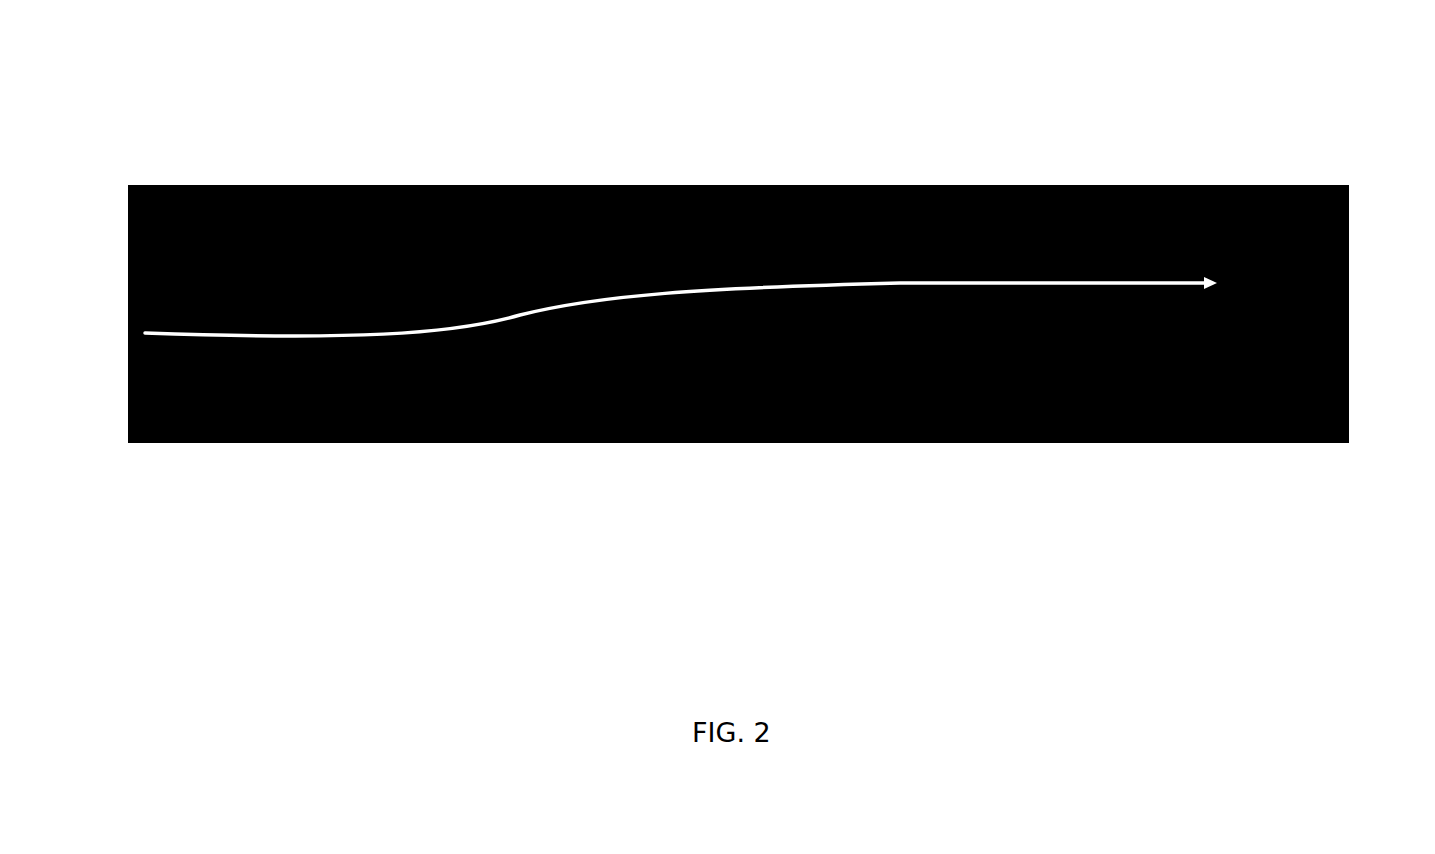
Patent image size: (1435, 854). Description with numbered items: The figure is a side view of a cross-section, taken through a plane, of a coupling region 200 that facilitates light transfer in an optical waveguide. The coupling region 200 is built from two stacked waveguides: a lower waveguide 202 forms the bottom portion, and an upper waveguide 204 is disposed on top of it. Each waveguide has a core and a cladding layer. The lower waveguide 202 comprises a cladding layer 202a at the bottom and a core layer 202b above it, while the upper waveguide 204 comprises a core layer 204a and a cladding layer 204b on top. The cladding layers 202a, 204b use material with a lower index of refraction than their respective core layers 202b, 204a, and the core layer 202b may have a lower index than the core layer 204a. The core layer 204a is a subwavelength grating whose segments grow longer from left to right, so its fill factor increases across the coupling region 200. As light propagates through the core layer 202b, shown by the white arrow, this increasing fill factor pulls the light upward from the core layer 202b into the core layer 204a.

The coupling region 200 is at (741, 248).
The lower waveguide 202 is at (741, 370).
The cladding layer 202a is at (1348, 402).
The core layer 202b is at (1348, 338).
The upper waveguide 204 is at (741, 249).
The core layer 204a is at (1346, 282).
The cladding layer 204b is at (1346, 223).